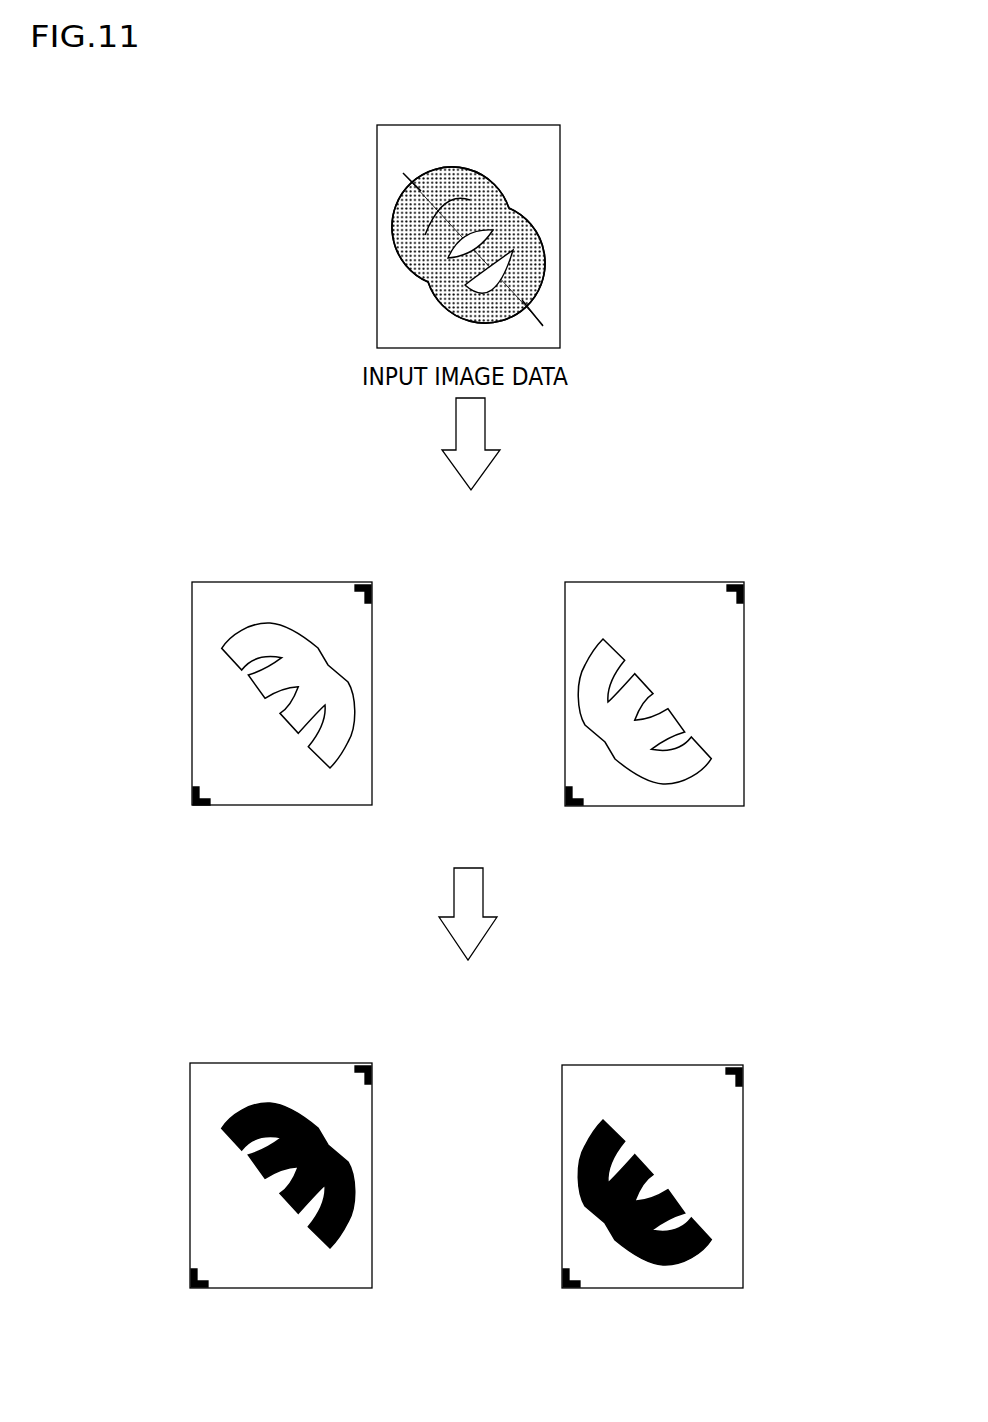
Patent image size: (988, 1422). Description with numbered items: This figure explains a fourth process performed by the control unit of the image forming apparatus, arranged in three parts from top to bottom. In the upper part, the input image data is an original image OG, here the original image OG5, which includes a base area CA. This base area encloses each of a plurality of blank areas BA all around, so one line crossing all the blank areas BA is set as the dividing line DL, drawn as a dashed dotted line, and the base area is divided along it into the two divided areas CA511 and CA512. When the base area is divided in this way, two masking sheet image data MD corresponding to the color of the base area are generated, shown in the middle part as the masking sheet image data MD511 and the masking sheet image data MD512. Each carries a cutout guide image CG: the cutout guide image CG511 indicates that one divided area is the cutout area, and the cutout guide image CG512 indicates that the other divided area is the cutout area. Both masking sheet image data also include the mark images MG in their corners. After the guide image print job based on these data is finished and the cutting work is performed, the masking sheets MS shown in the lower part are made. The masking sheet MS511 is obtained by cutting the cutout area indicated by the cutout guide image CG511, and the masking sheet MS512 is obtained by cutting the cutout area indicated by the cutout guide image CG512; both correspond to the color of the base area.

The original image OG is at (411, 215).
The original image OG5 is at (400, 154).
The dividing line DL is at (403, 172).
The base area CA is at (477, 261).
The base area CA511 is at (549, 285).
The base area CA512 is at (386, 243).
The blank area BA is at (463, 184).
The masking sheet image data MD is at (450, 654).
The masking sheet image data MD511 is at (222, 580).
The masking sheet image data MD512 is at (595, 580).
The mark image MG is at (358, 583).
The cutout guide image CG is at (467, 703).
The cutout guide image CG511 is at (352, 675).
The cutout guide image CG512 is at (576, 714).
The masking sheet MS is at (450, 1135).
The masking sheet MS511 is at (220, 1062).
The masking sheet MS512 is at (590, 1062).